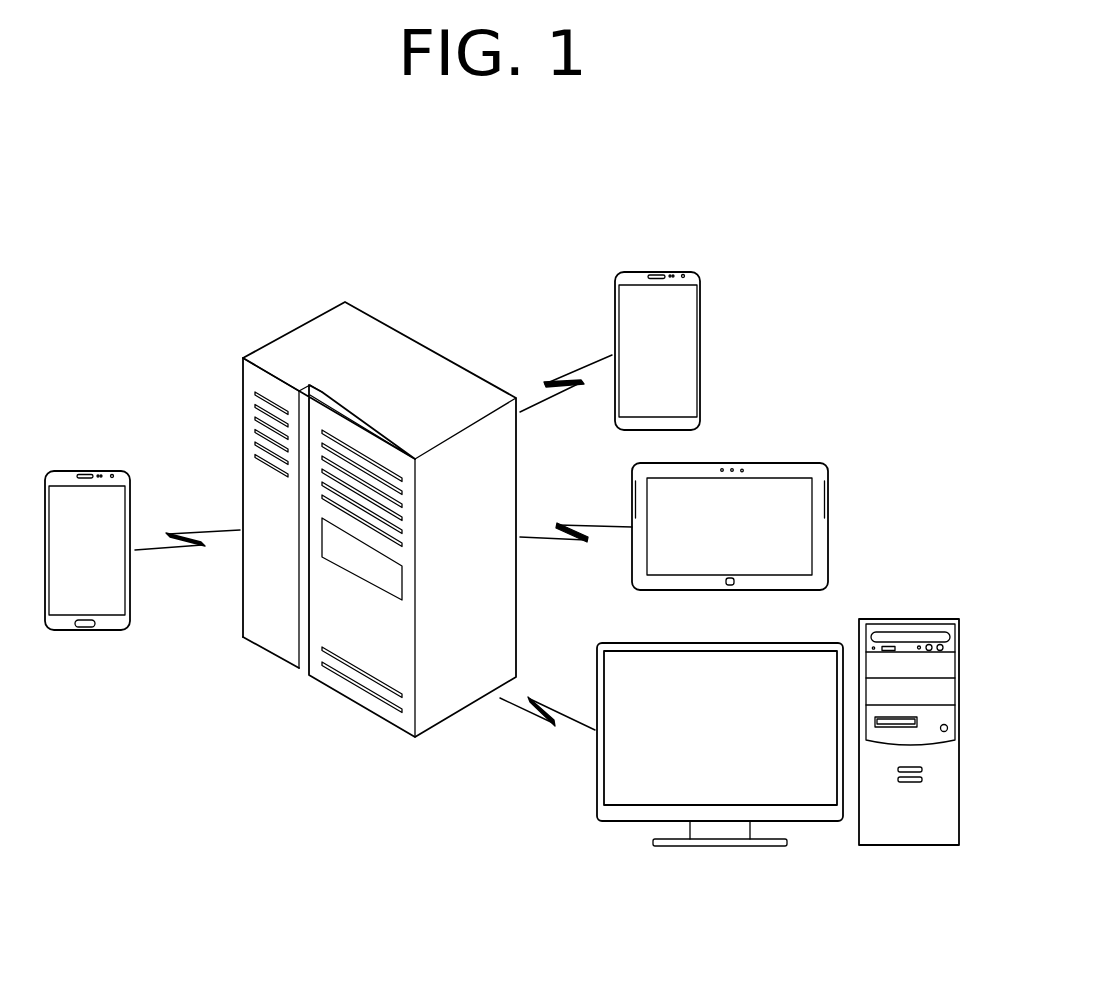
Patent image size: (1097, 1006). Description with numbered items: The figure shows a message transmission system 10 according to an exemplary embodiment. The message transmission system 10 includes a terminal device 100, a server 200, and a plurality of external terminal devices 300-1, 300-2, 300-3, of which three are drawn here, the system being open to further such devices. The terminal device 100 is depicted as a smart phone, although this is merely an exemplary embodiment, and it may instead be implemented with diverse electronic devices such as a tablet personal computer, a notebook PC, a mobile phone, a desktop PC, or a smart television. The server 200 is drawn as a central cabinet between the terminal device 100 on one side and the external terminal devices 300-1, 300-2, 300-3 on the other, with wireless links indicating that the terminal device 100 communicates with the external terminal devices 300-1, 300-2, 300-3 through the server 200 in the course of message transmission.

The message transmission system 10 is at (492, 161).
The terminal device 100 is at (111, 471).
The server 200 is at (375, 328).
The external terminal device 300-1 is at (682, 272).
The external terminal device 300-2 is at (810, 463).
The external terminal device 300-3 is at (911, 619).